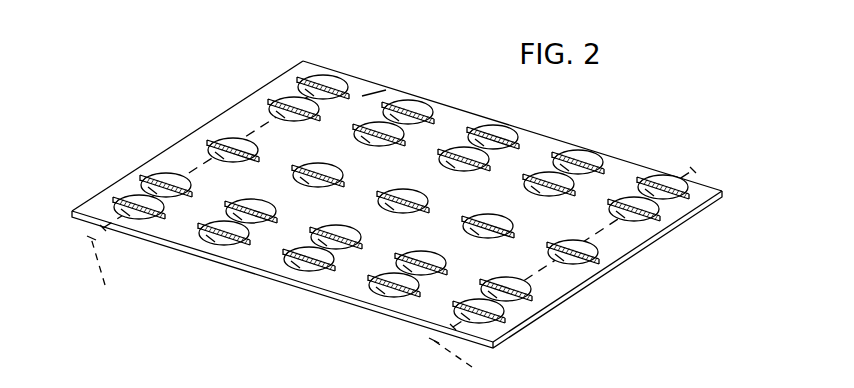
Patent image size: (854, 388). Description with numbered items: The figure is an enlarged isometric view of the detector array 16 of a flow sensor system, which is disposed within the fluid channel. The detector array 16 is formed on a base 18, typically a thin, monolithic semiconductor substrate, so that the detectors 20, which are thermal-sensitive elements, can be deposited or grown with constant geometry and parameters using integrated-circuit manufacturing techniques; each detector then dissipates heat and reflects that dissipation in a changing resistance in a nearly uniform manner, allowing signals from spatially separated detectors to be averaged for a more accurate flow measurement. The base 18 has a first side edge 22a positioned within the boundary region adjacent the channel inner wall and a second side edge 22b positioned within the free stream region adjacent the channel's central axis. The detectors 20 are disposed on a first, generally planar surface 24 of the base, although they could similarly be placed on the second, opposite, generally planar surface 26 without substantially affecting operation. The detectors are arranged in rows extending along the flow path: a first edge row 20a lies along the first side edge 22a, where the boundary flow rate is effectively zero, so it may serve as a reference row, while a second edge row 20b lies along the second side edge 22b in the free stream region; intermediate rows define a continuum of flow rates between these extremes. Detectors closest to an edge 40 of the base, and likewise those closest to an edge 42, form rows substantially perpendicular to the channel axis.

The detector array 16 is at (619, 135).
The base 18 is at (323, 73).
The detectors 20 is at (350, 291).
The first edge row 20a is at (106, 271).
The second edge row 20b is at (469, 356).
The first side edge 22a is at (170, 146).
The second side edge 22b is at (577, 293).
The first generally planar surface 24 is at (260, 255).
The second generally planar surface 26 is at (387, 89).
The edge 40 is at (267, 273).
The edge 42 is at (447, 108).